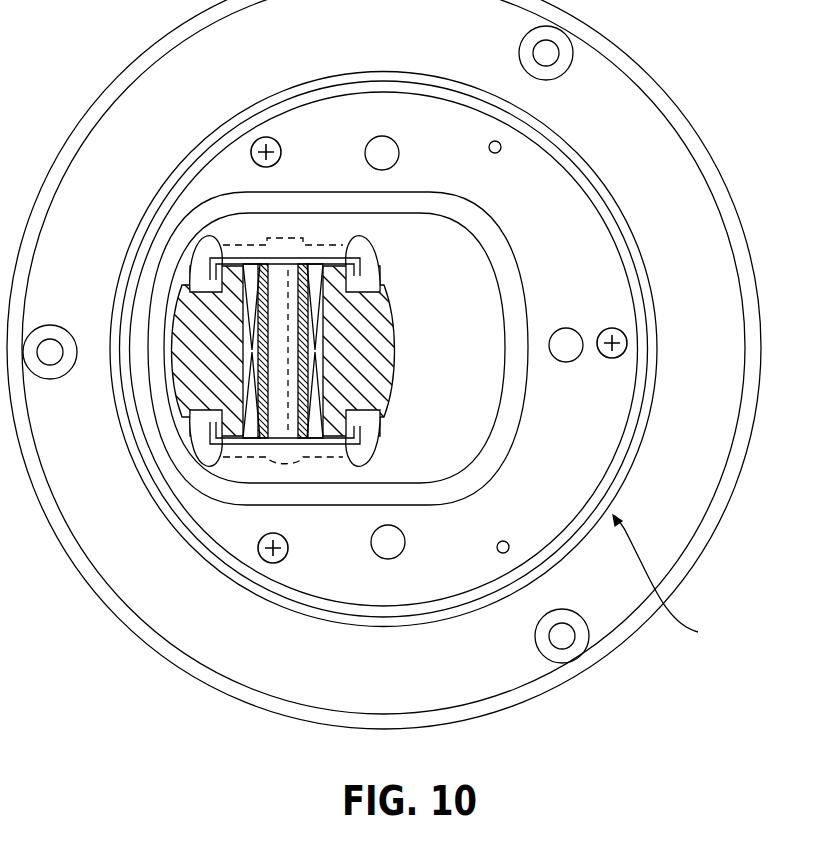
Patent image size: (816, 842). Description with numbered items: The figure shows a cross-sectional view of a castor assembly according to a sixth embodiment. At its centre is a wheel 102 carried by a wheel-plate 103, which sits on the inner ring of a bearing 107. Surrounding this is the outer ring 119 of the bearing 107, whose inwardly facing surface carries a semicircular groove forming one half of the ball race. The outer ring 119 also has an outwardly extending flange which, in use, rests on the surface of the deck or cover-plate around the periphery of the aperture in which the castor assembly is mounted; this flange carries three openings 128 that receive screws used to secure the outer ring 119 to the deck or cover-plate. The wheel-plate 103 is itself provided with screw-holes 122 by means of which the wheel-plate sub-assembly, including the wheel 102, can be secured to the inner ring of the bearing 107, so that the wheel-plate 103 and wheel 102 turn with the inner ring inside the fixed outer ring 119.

The wheel 102 is at (388, 392).
The wheel-plate 103 is at (575, 203).
The bearing 107 is at (677, 583).
The outer ring 119 is at (690, 523).
The screw-holes 122 is at (627, 332).
The openings 128 is at (550, 52).